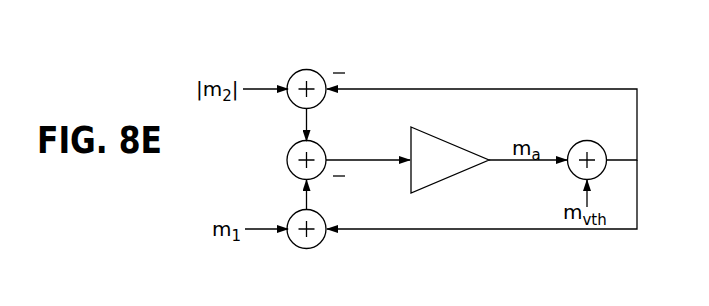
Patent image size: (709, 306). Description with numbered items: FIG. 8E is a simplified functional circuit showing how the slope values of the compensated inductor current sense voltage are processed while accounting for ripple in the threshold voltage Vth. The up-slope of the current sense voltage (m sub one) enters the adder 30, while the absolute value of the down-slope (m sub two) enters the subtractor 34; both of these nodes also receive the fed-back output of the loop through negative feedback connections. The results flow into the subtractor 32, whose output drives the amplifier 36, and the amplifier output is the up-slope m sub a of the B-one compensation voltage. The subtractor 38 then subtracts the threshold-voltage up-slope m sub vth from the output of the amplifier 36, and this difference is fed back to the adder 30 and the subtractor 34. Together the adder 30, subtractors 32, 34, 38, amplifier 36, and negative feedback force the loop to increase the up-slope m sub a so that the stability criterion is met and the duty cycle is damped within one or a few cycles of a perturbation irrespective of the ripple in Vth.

The adder 30 is at (325, 221).
The subtractor 32 is at (325, 152).
The subtractor 34 is at (309, 70).
The amplifier 36 is at (452, 142).
The subtractor 38 is at (597, 143).